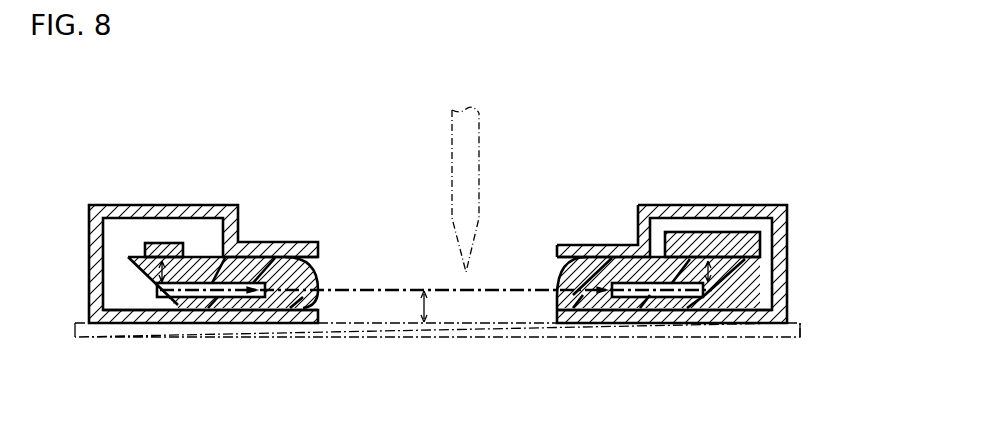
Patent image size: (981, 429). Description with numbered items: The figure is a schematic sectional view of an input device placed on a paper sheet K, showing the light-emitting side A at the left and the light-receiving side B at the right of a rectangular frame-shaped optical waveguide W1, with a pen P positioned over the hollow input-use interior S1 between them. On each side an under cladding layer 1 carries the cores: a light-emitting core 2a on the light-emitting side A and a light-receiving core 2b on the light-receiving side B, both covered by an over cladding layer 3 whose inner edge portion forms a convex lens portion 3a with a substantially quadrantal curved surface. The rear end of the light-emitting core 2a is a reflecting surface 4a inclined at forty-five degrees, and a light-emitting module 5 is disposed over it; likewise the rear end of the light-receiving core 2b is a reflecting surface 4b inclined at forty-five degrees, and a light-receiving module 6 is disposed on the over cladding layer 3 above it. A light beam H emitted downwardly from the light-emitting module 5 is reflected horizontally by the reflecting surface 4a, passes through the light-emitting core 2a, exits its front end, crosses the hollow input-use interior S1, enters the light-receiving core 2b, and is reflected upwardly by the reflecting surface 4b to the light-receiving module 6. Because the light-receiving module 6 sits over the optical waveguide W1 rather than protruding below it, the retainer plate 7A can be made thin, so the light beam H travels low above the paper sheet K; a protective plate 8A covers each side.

The protective plate 8A is at (99, 214).
The retainer plate 7A is at (220, 317).
The under cladding layer 1 is at (199, 300).
The light-emitting core 2a is at (240, 286).
The light-receiving core 2b is at (628, 283).
The over cladding layer 3 is at (248, 272).
The convex lens portion 3a is at (307, 276).
The reflecting surface 4a is at (156, 302).
The reflecting surface 4b is at (712, 298).
The light-emitting module 5 is at (152, 243).
The light-receiving module 6 is at (693, 237).
The paper sheet K is at (452, 334).
The light beam H is at (443, 288).
The pen P is at (459, 146).
The optical waveguide W1 is at (203, 255).
The hollow input-use interior S1 is at (322, 244).
The light-emitting side A is at (330, 133).
The light-receiving side B is at (678, 133).